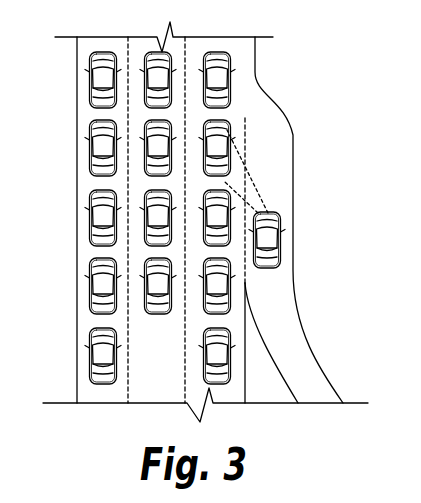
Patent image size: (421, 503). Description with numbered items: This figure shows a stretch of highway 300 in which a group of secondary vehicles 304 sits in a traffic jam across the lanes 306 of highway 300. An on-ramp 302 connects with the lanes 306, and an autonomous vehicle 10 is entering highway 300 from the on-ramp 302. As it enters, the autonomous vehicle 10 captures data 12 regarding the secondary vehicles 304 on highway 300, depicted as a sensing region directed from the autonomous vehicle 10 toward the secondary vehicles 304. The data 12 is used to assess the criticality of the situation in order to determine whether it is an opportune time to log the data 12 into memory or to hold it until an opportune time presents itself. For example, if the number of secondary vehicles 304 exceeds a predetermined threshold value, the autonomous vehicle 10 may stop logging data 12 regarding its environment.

The highway 300 is at (340, 45).
The on-ramp 302 is at (302, 363).
The secondary vehicles 304 is at (228, 33).
The lanes 306 is at (197, 391).
The autonomous vehicle 10 is at (295, 242).
The data 12 is at (250, 173).